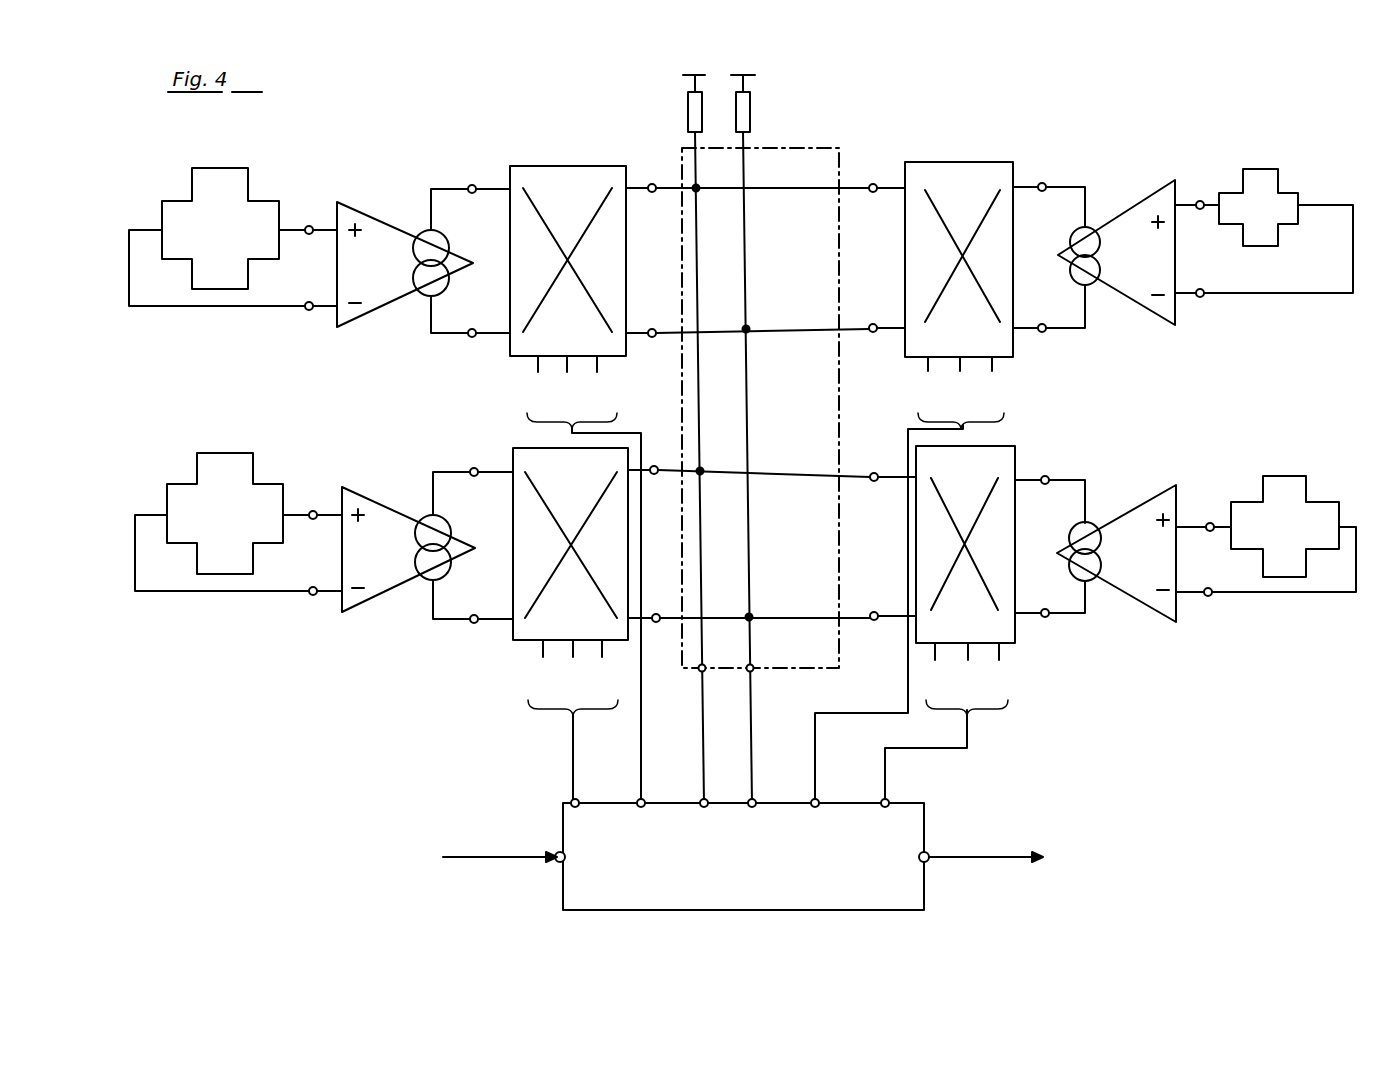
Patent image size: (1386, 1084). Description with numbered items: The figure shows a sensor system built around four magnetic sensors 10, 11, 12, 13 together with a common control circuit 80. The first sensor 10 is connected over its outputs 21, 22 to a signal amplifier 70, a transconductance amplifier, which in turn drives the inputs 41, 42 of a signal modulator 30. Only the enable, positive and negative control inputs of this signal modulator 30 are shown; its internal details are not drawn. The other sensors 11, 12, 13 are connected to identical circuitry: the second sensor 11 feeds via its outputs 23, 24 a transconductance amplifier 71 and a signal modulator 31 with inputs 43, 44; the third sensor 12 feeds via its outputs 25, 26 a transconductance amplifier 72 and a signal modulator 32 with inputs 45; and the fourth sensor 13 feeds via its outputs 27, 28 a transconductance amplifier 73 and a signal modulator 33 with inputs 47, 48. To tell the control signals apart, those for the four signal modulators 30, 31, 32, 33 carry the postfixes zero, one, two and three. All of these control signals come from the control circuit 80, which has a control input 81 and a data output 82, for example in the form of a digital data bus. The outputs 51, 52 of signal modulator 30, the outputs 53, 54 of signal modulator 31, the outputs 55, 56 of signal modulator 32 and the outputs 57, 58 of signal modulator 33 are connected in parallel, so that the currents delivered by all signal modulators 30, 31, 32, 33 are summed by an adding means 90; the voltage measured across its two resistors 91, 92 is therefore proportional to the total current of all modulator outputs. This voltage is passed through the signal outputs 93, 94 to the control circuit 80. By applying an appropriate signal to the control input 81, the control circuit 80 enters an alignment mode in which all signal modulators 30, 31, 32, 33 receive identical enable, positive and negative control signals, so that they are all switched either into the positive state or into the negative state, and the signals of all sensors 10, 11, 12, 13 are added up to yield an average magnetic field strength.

The sensor 10 is at (216, 176).
The sensor 11 is at (220, 458).
The sensor 12 is at (1290, 480).
The sensor 13 is at (1258, 178).
The sensor output 21 is at (310, 225).
The sensor output 22 is at (310, 301).
The sensor output 23 is at (313, 511).
The sensor output 24 is at (313, 587).
The sensor output 25 is at (1210, 523).
The sensor output 26 is at (1208, 596).
The sensor output 27 is at (1200, 200).
The sensor output 28 is at (1200, 289).
The signal modulator 30 is at (626, 260).
The signal modulator 31 is at (628, 553).
The signal modulator 32 is at (917, 546).
The signal modulator 33 is at (906, 247).
The input of the signal modulator 41 is at (472, 184).
The input of the signal modulator 42 is at (472, 338).
The input of the signal modulator 43 is at (474, 468).
The input of the signal modulator 44 is at (474, 623).
The input of the signal modulator 45 is at (1045, 476).
The input of the signal modulator 47 is at (1042, 182).
The input of the signal modulator 48 is at (1042, 323).
The output of the signal modulator 51 is at (652, 184).
The output of the signal modulator 52 is at (652, 338).
The output of the signal modulator 53 is at (654, 466).
The output of the signal modulator 54 is at (656, 622).
The output of the signal modulator 55 is at (874, 473).
The output of the signal modulator 56 is at (874, 612).
The output of the signal modulator 57 is at (873, 184).
The output of the signal modulator 58 is at (873, 324).
The signal amplifier 70 is at (381, 222).
The transconductance amplifier 71 is at (384, 506).
The transconductance amplifier 72 is at (1121, 516).
The transconductance amplifier 73 is at (1118, 217).
The control circuit 80 is at (723, 900).
The control input 81 is at (556, 864).
The data output 82 is at (928, 863).
The adding means 90 is at (785, 150).
The resistor 91 is at (702, 110).
The resistor 92 is at (750, 110).
The signal output 93 is at (713, 680).
The signal output 94 is at (761, 680).